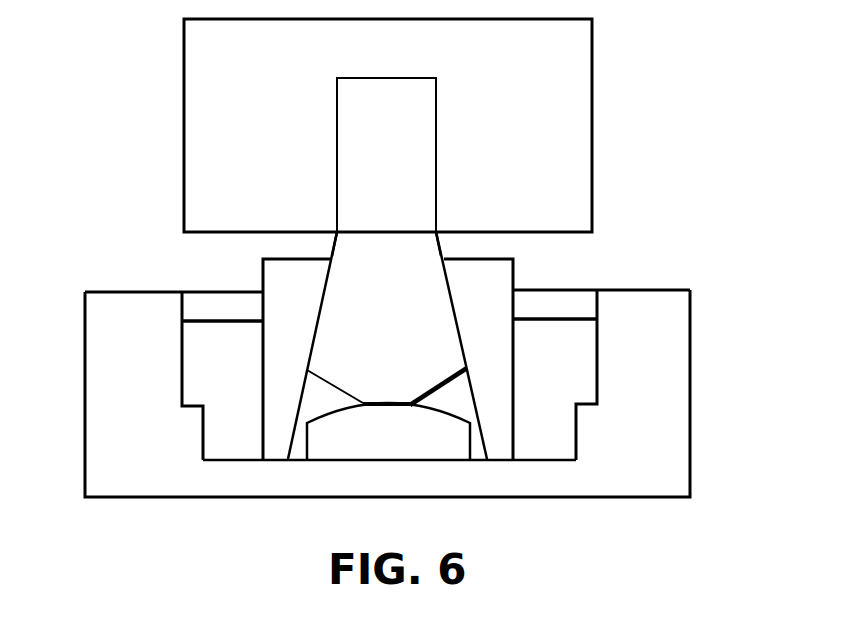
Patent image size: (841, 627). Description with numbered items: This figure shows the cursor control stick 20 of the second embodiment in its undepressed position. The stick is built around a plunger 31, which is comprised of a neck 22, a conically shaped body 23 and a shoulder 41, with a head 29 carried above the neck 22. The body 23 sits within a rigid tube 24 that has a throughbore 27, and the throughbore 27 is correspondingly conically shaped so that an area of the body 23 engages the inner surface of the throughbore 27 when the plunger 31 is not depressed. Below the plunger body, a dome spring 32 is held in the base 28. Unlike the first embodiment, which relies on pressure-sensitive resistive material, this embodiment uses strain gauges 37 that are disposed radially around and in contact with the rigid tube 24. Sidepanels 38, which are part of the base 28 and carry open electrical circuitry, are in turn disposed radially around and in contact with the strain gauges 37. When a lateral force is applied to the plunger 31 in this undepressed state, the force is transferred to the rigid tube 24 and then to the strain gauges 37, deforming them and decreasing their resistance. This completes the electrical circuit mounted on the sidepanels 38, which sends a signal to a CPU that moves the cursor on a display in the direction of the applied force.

The cursor control stick 20 is at (113, 168).
The neck 22 is at (405, 131).
The body 23 is at (402, 335).
The rigid tube 24 is at (513, 282).
The throughbore 27 is at (318, 362).
The base 28 is at (168, 498).
The head 29 is at (593, 77).
The plunger 31 is at (355, 248).
The dome spring 32 is at (460, 422).
The strain gauges 37 is at (218, 292).
The sidepanels 38 is at (597, 375).
The shoulder 41 is at (445, 243).